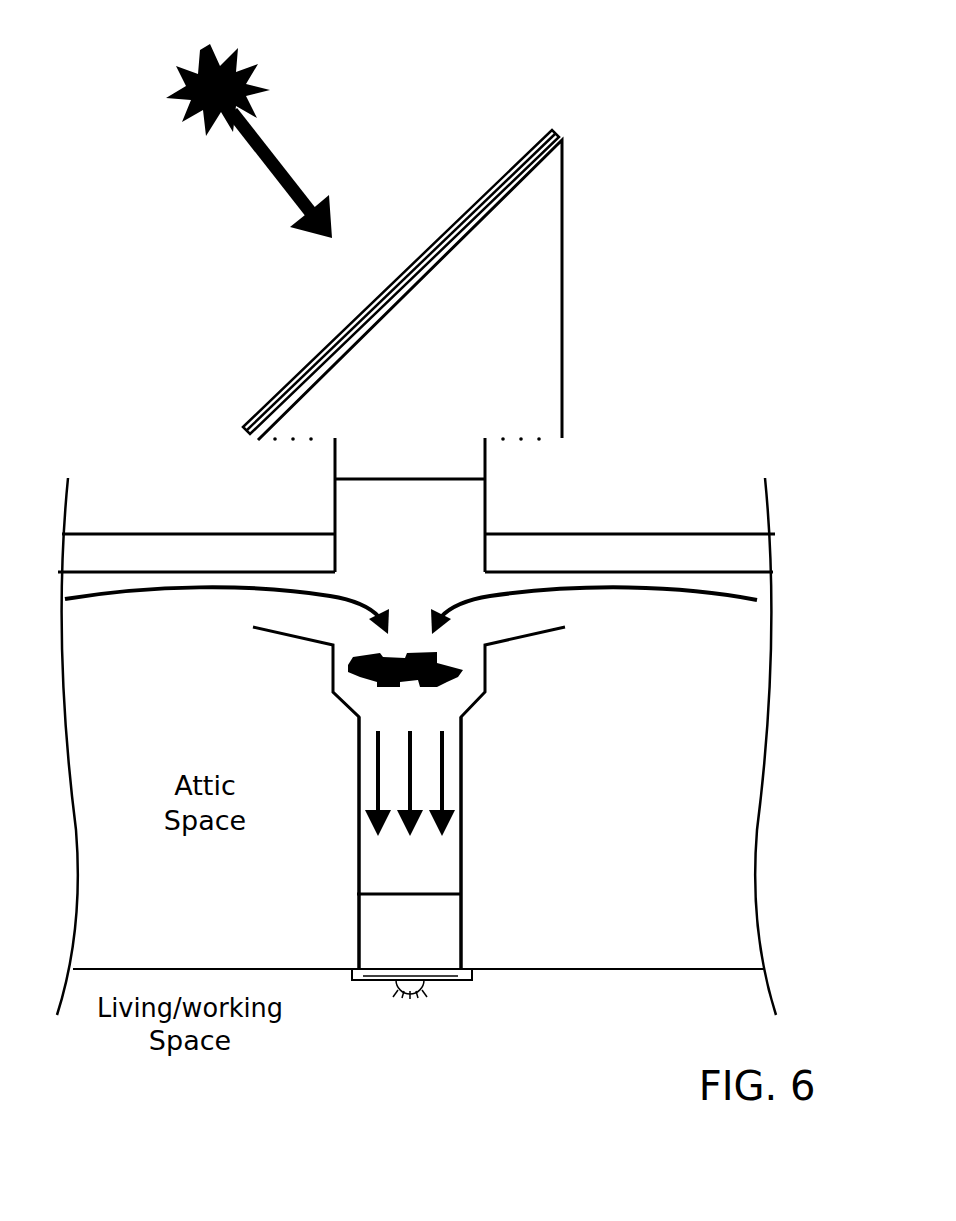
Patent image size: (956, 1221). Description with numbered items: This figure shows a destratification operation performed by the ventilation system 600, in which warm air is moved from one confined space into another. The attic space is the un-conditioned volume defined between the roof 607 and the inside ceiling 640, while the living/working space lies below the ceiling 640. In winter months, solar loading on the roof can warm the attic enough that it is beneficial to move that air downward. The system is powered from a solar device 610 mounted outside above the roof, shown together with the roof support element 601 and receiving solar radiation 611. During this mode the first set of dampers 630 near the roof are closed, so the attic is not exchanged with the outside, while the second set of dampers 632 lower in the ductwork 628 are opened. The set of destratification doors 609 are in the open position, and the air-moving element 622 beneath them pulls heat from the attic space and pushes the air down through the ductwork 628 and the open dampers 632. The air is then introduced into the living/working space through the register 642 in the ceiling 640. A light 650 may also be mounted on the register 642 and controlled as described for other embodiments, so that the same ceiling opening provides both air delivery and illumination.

The ventilation system 600 is at (638, 58).
The roof structure 601 is at (564, 282).
The roof 607 is at (685, 534).
The destratification doors 609 is at (278, 634).
The solar panel 610 is at (550, 128).
The sunlight 611 is at (222, 50).
The fan 622 is at (392, 688).
The ductwork 628 is at (462, 867).
The first set of dampers 630 is at (412, 479).
The second set of dampers 632 is at (423, 893).
The ceiling 640 is at (605, 971).
The register 642 is at (470, 982).
The light 650 is at (400, 1002).